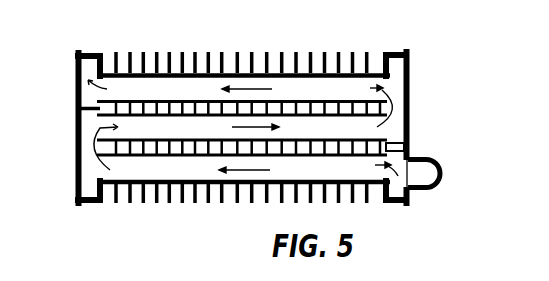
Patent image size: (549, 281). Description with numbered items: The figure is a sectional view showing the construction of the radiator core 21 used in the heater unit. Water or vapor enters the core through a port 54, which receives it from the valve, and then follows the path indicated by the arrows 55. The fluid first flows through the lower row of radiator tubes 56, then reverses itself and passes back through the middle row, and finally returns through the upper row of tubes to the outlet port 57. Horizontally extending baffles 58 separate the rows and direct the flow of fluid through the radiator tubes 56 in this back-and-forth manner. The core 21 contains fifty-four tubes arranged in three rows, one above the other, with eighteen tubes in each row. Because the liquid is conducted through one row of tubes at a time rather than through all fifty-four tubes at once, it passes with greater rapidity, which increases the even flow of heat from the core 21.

The core 21 is at (412, 72).
The port 54 is at (443, 174).
The arrows 55 is at (265, 167).
The radiator tubes 56 is at (137, 184).
The outlet port 57 is at (81, 94).
The baffles 58 is at (87, 109).